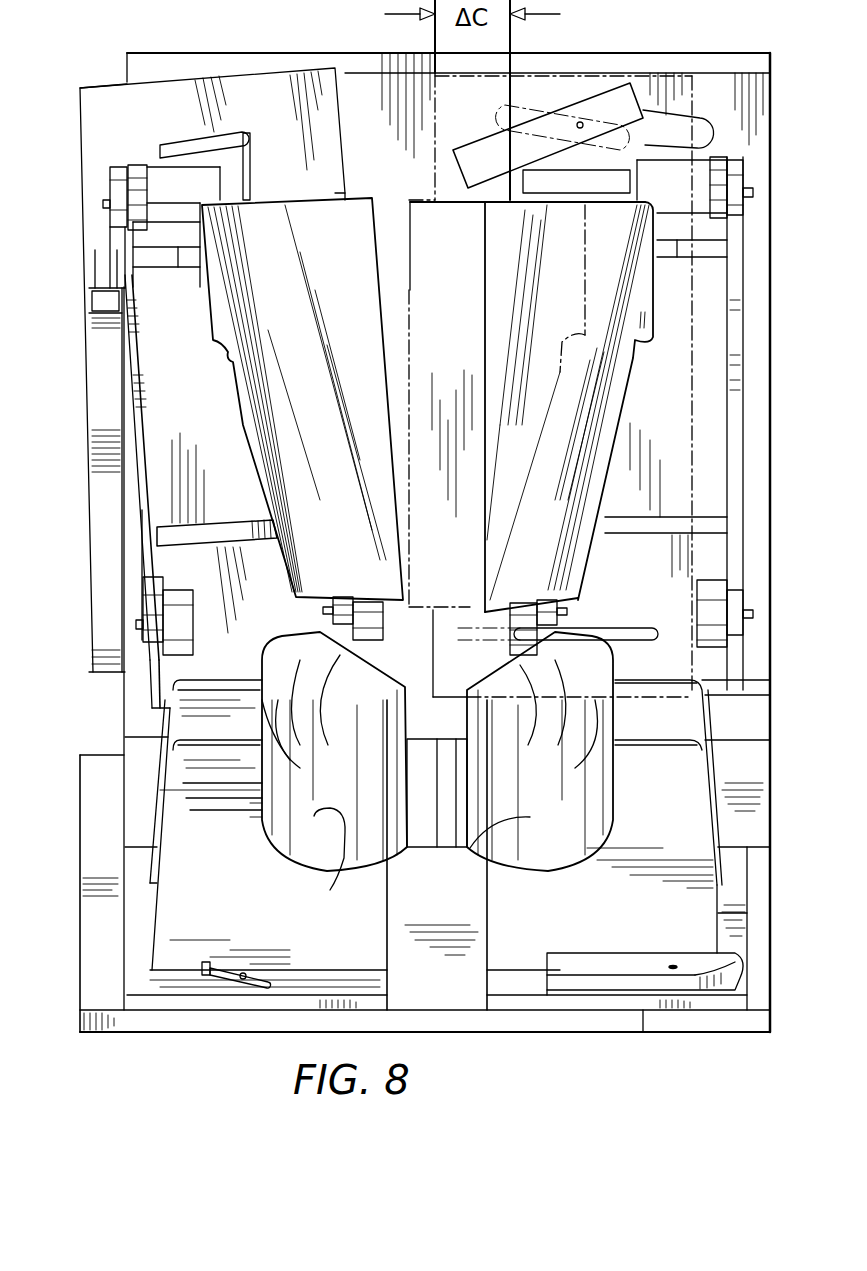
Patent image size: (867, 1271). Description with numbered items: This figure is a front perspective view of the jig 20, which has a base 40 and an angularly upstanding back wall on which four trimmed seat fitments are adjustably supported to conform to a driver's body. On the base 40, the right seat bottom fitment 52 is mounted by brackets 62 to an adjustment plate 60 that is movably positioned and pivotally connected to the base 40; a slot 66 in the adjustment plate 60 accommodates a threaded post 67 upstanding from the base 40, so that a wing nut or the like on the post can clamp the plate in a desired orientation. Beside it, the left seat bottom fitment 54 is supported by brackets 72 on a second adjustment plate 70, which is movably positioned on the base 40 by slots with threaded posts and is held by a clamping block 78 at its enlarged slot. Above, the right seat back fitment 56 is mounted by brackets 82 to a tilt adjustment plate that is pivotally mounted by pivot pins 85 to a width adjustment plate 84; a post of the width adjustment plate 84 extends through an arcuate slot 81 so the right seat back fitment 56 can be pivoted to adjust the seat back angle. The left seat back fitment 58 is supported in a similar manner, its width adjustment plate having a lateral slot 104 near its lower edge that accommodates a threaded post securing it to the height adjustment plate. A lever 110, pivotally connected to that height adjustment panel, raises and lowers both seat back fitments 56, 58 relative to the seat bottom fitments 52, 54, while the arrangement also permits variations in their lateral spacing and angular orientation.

The jig 20 is at (70, 80).
The width adjustment plate 84 is at (97, 125).
The brackets 82 is at (136, 165).
The arcuate slot 81 is at (120, 228).
The lever 110 is at (87, 360).
The right seat back fitment 56 is at (340, 230).
The left seat back fitment 58 is at (580, 415).
The lateral slot 104 is at (630, 633).
The pivot pins 85 is at (322, 610).
The brackets 62 is at (185, 818).
The base 40 is at (97, 964).
The threaded post 67 is at (207, 960).
The slot 66 is at (244, 978).
The adjustment plate 60 is at (160, 978).
The right seat bottom fitment 52 is at (340, 870).
The left seat bottom fitment 54 is at (467, 868).
The clamping block 78 is at (575, 952).
The brackets 72 is at (520, 950).
The adjustment plate 70 is at (535, 950).